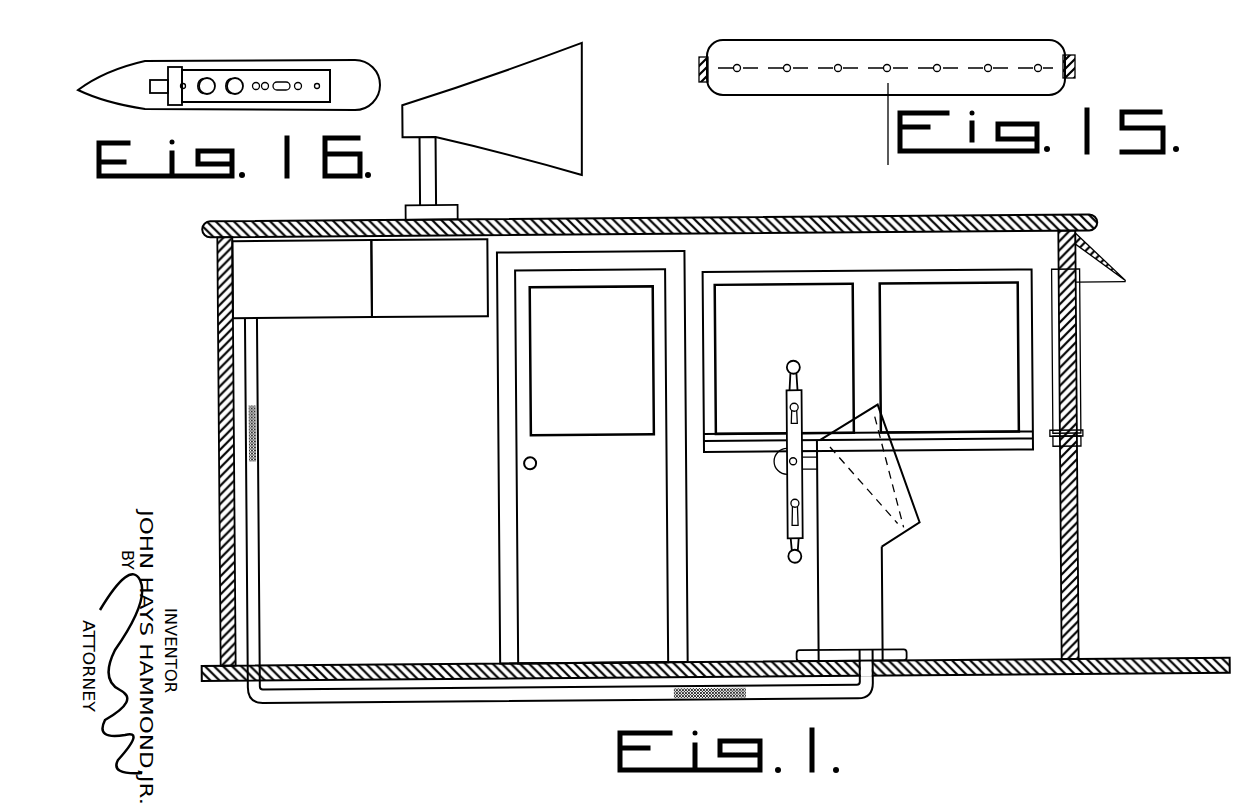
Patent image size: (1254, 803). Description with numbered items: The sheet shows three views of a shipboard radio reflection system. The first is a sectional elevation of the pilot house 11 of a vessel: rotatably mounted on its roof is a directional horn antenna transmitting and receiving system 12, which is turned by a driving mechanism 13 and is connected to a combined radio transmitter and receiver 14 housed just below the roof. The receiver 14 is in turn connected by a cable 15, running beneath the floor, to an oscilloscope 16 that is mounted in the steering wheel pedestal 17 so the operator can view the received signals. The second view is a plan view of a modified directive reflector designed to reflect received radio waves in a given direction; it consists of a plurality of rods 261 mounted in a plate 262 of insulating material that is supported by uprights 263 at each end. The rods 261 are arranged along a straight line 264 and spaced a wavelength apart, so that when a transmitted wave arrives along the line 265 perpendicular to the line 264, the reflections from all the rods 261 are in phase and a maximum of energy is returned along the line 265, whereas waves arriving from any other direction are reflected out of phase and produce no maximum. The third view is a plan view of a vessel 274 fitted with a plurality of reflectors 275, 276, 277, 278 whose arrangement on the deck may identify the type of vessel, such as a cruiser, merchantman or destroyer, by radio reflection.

In FIG. 1, the pilot house 11 is at (1080, 510).
In FIG. 1, the directional horn antenna transmitting and receiving system 12 is at (586, 132).
In FIG. 1, the driving mechanism 13 is at (442, 305).
In FIG. 1, the combined radio transmitter and receiver 14 is at (343, 304).
In FIG. 1, the cable 15 is at (419, 696).
In FIG. 1, the oscilloscope 16 is at (914, 492).
In FIG. 1, the steering wheel pedestal 17 is at (869, 579).
In FIG. 15, the rods 261 is at (838, 72).
In FIG. 15, the plate 262 is at (967, 84).
In FIG. 15, the uprights 263 is at (1070, 55).
In FIG. 15, the straight line 264 is at (880, 68).
In FIG. 15, the line 265 is at (888, 126).
In FIG. 16, the vessel 274 is at (142, 100).
In FIG. 16, the reflector 275 is at (257, 82).
In FIG. 16, the reflector 276 is at (268, 82).
In FIG. 16, the reflector 277 is at (290, 82).
In FIG. 16, the reflector 278 is at (298, 90).